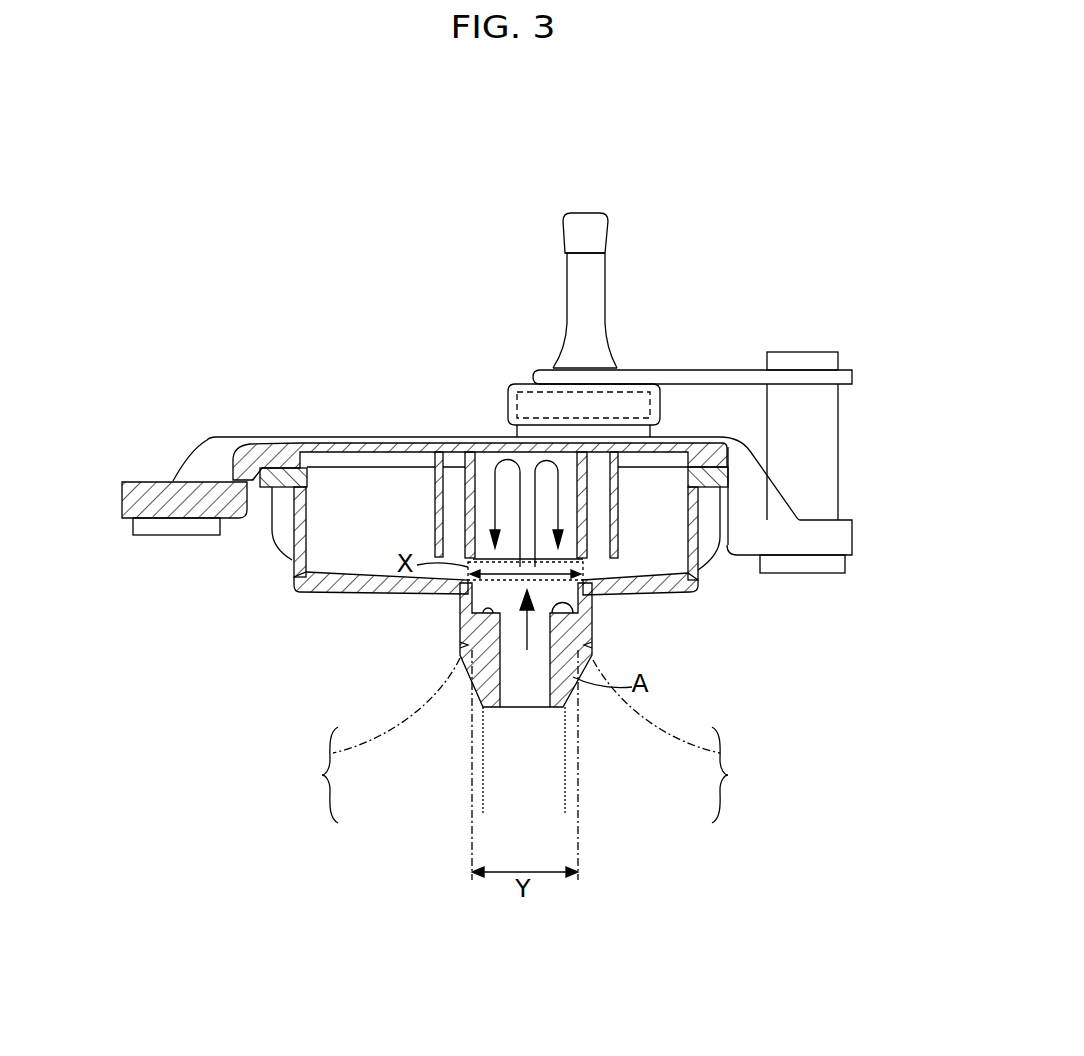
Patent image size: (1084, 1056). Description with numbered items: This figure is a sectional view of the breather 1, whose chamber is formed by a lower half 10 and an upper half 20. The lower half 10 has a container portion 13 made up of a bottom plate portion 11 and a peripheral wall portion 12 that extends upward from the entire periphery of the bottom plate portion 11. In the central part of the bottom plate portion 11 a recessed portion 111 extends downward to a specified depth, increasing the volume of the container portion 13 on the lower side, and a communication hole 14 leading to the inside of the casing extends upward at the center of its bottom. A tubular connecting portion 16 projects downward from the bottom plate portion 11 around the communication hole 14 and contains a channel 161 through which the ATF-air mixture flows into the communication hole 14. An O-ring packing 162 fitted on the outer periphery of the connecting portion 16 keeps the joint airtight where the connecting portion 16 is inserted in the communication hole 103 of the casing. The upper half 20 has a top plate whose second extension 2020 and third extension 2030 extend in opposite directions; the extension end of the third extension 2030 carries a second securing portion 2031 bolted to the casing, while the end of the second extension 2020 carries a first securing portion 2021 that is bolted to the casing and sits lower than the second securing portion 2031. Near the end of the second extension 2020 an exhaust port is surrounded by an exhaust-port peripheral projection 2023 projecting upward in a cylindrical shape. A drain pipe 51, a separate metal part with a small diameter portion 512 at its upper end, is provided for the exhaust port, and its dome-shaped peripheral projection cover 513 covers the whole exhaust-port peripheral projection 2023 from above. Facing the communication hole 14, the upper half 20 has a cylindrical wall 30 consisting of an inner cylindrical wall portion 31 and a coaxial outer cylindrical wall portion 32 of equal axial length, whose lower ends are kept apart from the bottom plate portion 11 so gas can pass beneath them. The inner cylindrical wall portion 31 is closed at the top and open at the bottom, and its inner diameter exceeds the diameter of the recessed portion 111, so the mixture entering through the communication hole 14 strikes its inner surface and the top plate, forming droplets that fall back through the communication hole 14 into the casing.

The breather 1 is at (503, 440).
The lower half 10 is at (509, 661).
The bottom plate portion 11 is at (368, 590).
The peripheral wall portion 12 is at (285, 558).
The container portion 13 is at (485, 596).
The communication hole 14 is at (592, 632).
The tubular connecting portion 16 is at (518, 698).
The channel 161 is at (500, 700).
The O-ring packing 162 is at (460, 632).
The upper half 20 is at (542, 433).
The second extension 2020 is at (870, 454).
The first securing portion 2021 is at (864, 533).
The exhaust-port peripheral projection 2023 is at (550, 428).
The third extension 2030 is at (181, 436).
The second securing portion 2031 is at (110, 495).
The cylindrical wall 30 is at (646, 541).
The inner cylindrical wall portion 31 is at (466, 497).
The outer cylindrical wall portion 32 is at (433, 503).
The drain pipe 51 is at (623, 239).
The small diameter portion 512 is at (618, 212).
The peripheral projection cover 513 is at (637, 369).
The communication hole 103 is at (467, 690).
The recessed portion 111 is at (492, 720).